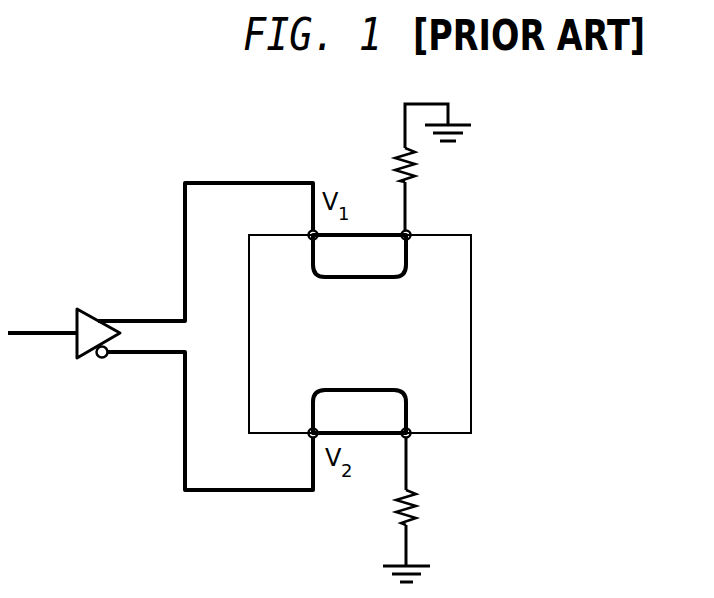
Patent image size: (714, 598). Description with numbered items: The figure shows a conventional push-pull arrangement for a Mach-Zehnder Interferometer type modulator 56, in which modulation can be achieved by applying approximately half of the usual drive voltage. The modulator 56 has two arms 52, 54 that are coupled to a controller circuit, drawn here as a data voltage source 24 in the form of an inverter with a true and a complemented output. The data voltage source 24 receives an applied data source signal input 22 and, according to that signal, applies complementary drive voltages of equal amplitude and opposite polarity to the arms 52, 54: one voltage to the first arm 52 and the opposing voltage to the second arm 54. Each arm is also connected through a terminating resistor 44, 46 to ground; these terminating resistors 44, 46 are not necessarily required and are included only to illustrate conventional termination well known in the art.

The data source signal input 22 is at (20, 336).
The data voltage source 24 is at (91, 312).
The terminating resistor 44 is at (396, 166).
The terminating resistor 46 is at (418, 516).
The arm 52 is at (386, 279).
The arm 54 is at (386, 389).
The MZI-type modulator 56 is at (471, 276).